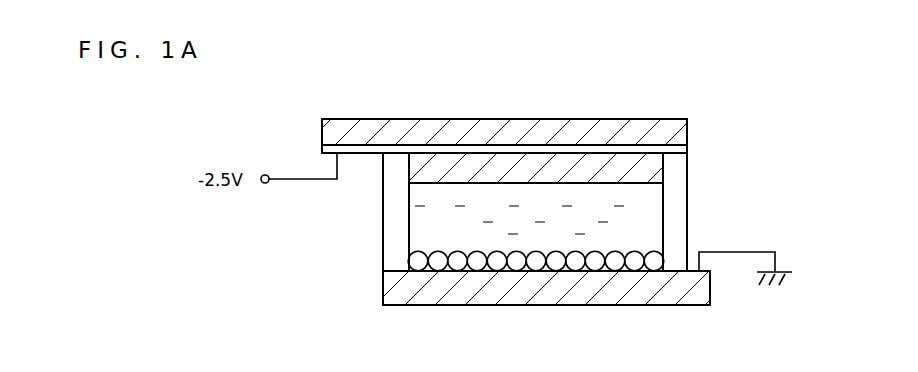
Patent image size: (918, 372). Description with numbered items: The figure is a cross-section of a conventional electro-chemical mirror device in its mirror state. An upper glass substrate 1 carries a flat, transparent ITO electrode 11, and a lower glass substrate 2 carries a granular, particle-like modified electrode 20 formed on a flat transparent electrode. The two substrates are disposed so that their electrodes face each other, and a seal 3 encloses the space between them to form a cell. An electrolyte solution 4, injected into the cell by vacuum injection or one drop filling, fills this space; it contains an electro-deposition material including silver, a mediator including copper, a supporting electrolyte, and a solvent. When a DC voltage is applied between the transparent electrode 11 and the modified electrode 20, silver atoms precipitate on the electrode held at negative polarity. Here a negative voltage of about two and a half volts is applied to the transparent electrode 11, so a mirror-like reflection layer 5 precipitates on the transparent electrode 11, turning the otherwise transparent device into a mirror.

The glass substrate 1 is at (695, 123).
The transparent electrode 11 is at (690, 149).
The reflection layer 5 is at (656, 168).
The seal 3 is at (683, 212).
The electrolyte solution 4 is at (425, 208).
The modified electrode 20 is at (415, 262).
The glass substrate 2 is at (642, 295).